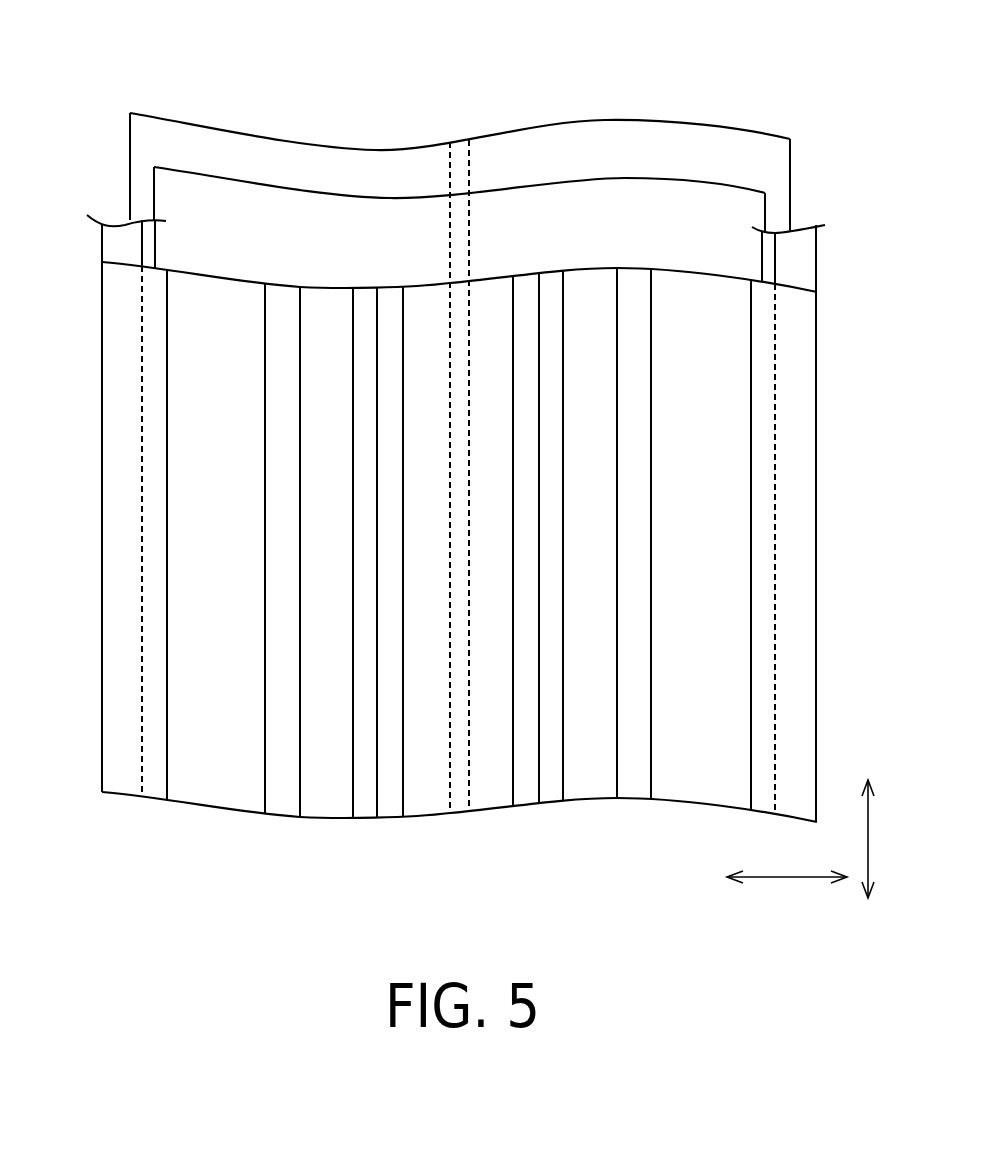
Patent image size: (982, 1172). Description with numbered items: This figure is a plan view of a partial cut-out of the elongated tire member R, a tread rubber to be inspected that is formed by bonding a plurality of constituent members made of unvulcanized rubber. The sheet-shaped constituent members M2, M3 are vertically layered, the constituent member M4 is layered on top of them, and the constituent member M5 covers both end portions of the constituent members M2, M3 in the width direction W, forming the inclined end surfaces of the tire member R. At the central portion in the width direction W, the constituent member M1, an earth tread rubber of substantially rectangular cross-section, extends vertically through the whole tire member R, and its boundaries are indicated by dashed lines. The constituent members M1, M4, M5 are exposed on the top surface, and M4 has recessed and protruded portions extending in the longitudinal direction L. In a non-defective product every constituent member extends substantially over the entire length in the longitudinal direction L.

The tire member R is at (310, 127).
The constituent member M1 is at (458, 150).
The constituent member M2 is at (352, 160).
The constituent member M3 is at (232, 195).
The constituent member M4 is at (318, 302).
The constituent member M5 is at (118, 233).
The longitudinal direction L is at (876, 839).
The width direction W is at (787, 861).